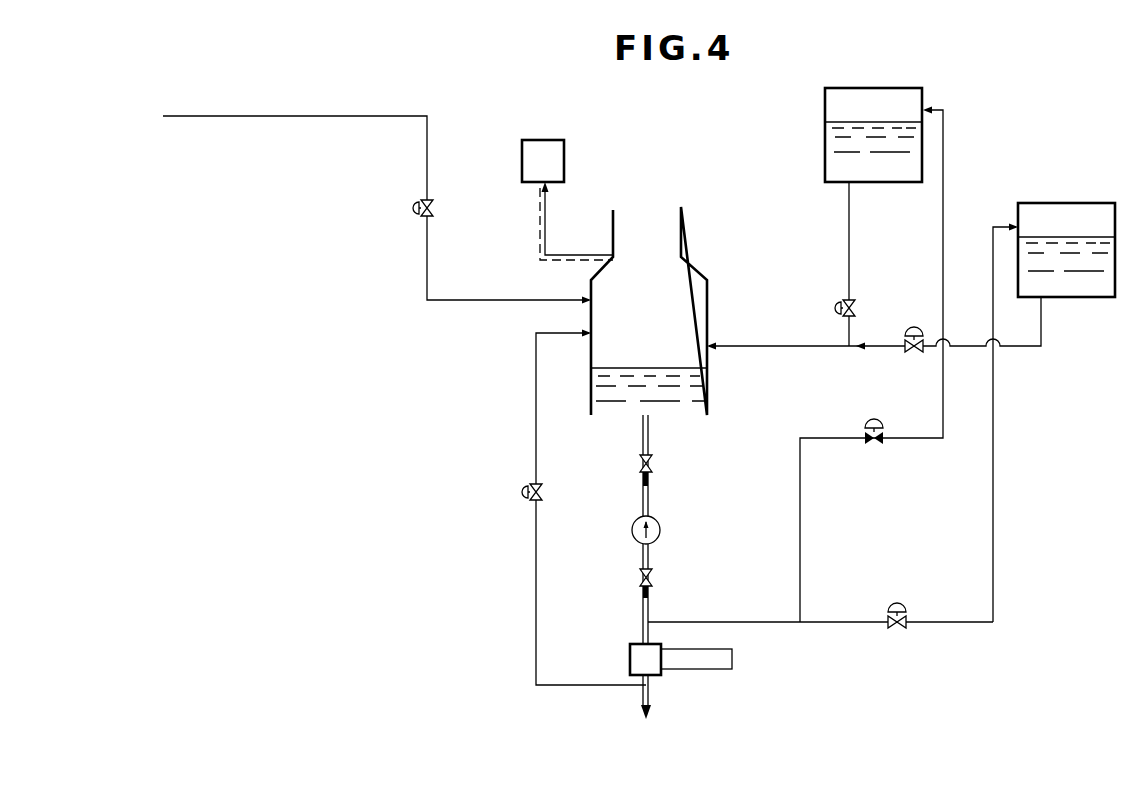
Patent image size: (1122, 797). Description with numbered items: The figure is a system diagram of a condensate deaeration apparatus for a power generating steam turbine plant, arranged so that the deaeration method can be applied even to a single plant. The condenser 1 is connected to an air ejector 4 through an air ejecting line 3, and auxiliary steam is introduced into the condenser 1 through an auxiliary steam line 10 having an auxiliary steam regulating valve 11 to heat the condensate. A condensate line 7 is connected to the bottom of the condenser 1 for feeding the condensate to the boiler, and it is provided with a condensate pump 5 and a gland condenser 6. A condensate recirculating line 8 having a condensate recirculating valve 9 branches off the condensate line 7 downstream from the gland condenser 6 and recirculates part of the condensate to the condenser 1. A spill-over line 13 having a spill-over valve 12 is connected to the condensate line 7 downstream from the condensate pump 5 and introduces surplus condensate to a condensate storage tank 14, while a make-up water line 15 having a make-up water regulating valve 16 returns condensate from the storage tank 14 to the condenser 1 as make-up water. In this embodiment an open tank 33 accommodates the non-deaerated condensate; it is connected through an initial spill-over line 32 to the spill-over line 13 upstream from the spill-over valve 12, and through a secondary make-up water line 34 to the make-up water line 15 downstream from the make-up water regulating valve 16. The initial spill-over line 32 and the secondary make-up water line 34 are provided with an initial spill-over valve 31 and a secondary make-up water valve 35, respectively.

The condenser 1 is at (700, 262).
The air ejecting line 3 is at (540, 243).
The air ejector 4 is at (565, 165).
The condensate pump 5 is at (661, 527).
The gland condenser 6 is at (630, 662).
The condensate line 7 is at (652, 687).
The condensate recirculating line 8 is at (536, 636).
The condensate recirculating valve 9 is at (512, 492).
The auxiliary steam line 10 is at (289, 116).
The auxiliary steam regulating valve 11 is at (412, 218).
The spill-over valve 12 is at (870, 419).
The spill-over line 13 is at (943, 254).
The condensate storage tank 14 is at (825, 165).
The make-up water line 15 is at (849, 255).
The make-up water regulating valve 16 is at (852, 306).
The initial spill-over valve 31 is at (895, 604).
The initial spill-over line 32 is at (993, 572).
The open tank 33 is at (1066, 203).
The secondary make-up water line 34 is at (1036, 348).
The secondary make-up water valve 35 is at (918, 354).